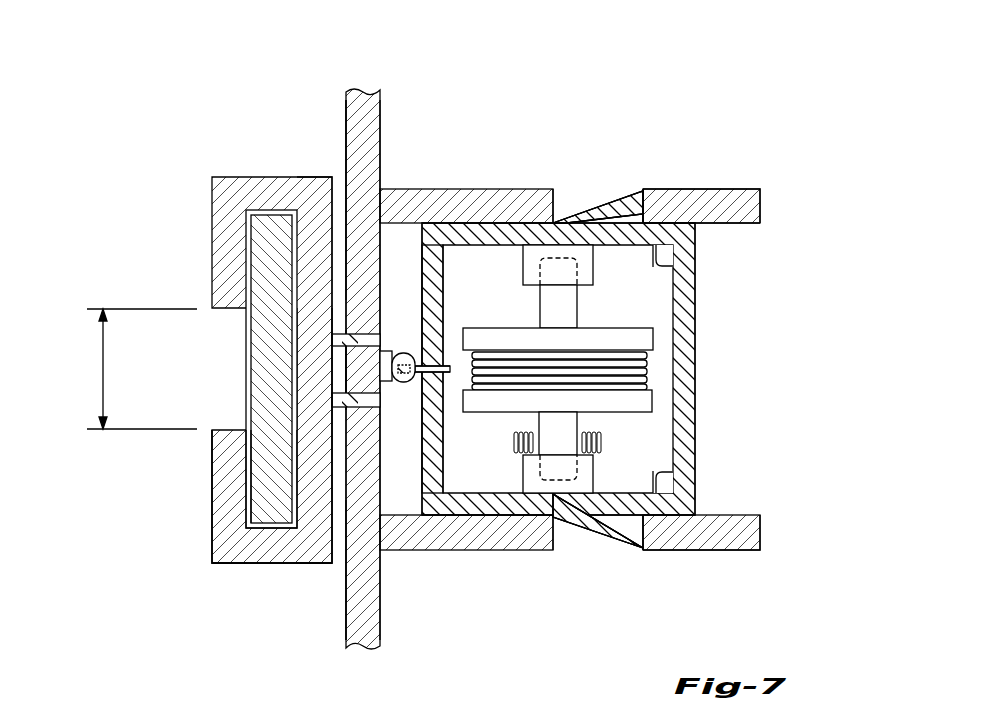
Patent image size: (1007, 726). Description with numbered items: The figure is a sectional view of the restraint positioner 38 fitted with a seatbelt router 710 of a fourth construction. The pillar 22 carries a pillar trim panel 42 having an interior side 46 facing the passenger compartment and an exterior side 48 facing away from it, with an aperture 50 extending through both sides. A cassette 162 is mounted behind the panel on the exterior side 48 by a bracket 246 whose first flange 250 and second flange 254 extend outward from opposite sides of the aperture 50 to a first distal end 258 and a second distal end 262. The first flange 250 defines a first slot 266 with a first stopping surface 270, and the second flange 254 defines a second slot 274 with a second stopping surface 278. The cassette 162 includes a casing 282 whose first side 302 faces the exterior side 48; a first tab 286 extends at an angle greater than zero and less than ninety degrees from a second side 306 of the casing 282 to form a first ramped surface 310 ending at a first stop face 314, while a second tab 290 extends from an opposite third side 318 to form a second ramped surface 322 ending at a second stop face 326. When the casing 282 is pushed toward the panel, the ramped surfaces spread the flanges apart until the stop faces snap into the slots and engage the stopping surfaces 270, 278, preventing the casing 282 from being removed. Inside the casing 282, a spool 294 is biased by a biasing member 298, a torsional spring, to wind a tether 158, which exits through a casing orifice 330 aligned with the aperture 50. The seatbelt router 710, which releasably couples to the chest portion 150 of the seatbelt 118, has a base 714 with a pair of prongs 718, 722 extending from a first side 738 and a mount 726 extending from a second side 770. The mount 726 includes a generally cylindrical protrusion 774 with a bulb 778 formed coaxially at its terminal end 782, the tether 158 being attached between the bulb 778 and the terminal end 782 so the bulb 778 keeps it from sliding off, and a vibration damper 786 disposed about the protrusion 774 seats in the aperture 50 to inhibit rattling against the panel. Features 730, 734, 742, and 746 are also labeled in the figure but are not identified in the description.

The pillar 22 is at (343, 108).
The restraint positioner 38 is at (143, 553).
The pillar trim panel 42 is at (362, 95).
The interior side 46 is at (345, 145).
The exterior side 48 is at (382, 130).
The aperture 50 is at (347, 419).
The seatbelt 118 is at (244, 516).
The chest portion 150 is at (267, 340).
The tether 158 is at (450, 373).
The cassette 162 is at (704, 293).
The bracket 246 is at (742, 183).
The first flange 250 is at (762, 190).
The second flange 254 is at (757, 550).
The first distal end 258 is at (762, 213).
The second distal end 262 is at (765, 520).
The first slot 266 is at (562, 203).
The first stopping surface 270 is at (647, 215).
The second slot 274 is at (562, 548).
The second stopping surface 278 is at (647, 523).
The casing 282 is at (695, 342).
The first tab 286 is at (618, 205).
The second tab 290 is at (603, 527).
The spool 294 is at (652, 402).
The biasing member 298 is at (600, 446).
The first side 302 is at (412, 530).
The second side 306 is at (675, 266).
The first ramped surface 310 is at (577, 208).
The first stop face 314 is at (647, 203).
The third side 318 is at (667, 471).
The second ramped surface 322 is at (578, 530).
The second stop face 326 is at (640, 537).
The casing orifice 330 is at (430, 358).
The seatbelt router 710 is at (213, 563).
The base 714 is at (318, 487).
The prong 718 is at (278, 563).
The prong 722 is at (263, 178).
The mount 726 is at (347, 368).
The body corner 730 is at (317, 563).
The body side wall 734 is at (320, 177).
The first side 738 is at (298, 463).
The upper pocket 742 is at (246, 252).
The gap height 746 is at (102, 372).
The second side 770 is at (333, 543).
The protrusion 774 is at (365, 355).
The bulb 778 is at (407, 384).
The terminal end 782 is at (412, 352).
The vibration damper 786 is at (333, 340).